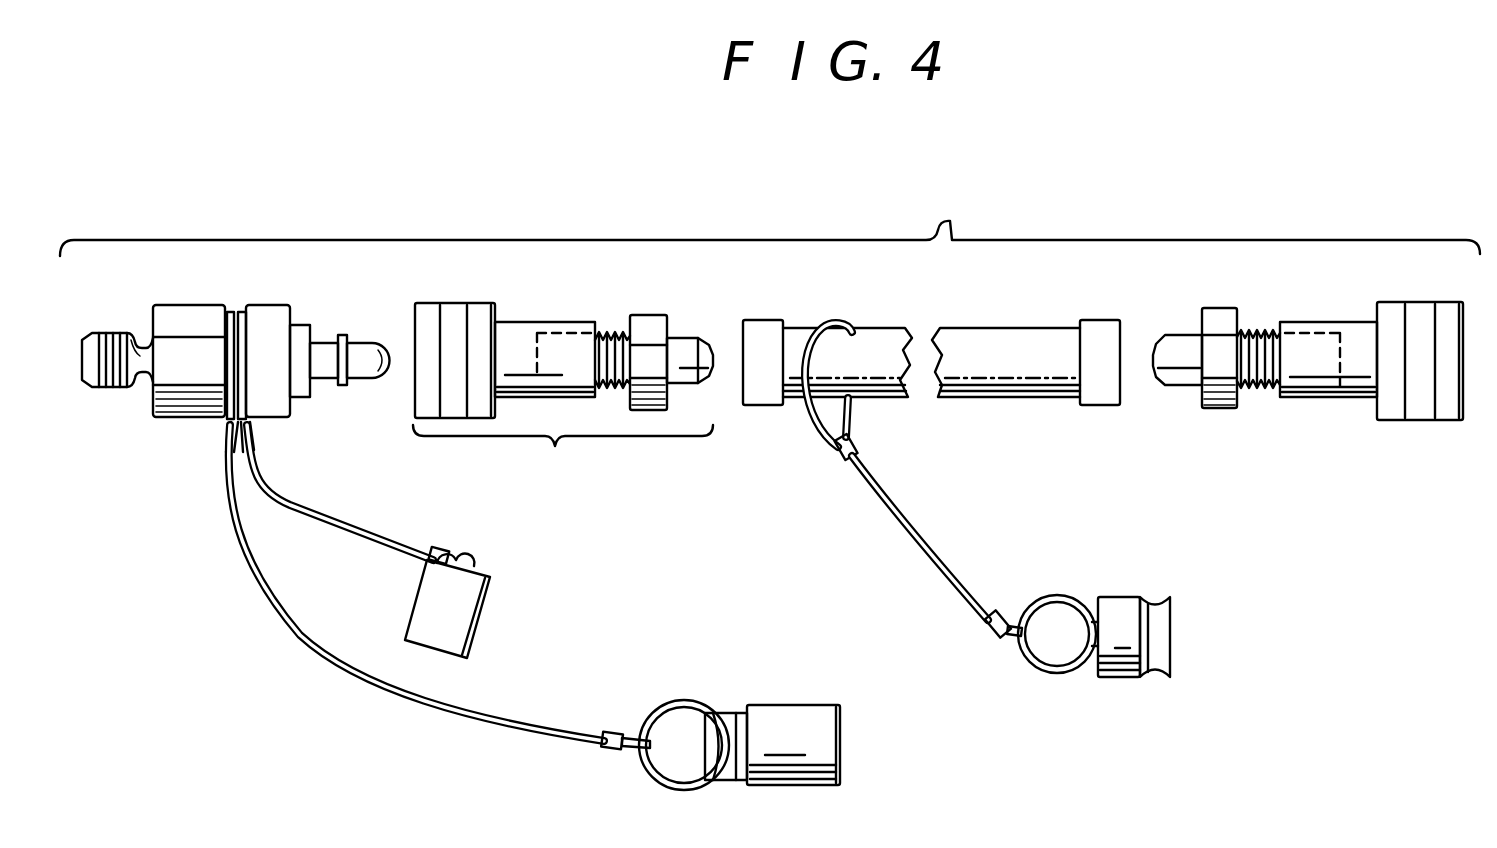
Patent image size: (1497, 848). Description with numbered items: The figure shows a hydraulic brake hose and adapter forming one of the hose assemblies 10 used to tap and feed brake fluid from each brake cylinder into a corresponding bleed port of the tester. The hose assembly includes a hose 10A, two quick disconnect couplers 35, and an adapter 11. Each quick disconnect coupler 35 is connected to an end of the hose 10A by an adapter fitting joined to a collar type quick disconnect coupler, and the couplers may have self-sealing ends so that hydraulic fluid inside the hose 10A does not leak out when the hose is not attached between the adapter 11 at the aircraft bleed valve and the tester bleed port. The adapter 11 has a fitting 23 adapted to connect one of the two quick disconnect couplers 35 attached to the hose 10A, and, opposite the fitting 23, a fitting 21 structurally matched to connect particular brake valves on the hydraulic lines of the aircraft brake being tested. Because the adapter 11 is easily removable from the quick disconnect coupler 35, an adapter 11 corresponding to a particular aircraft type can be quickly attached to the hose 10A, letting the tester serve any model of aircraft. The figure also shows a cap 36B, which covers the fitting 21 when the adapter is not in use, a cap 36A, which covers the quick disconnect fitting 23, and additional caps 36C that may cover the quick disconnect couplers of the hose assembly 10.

The hose assembly 10 is at (770, 219).
The hose 10A is at (962, 328).
The adapter 11 is at (236, 304).
The fitting 21 is at (102, 333).
The fitting 23 is at (362, 341).
The quick disconnect coupler 35 is at (563, 402).
The cap 36A is at (792, 786).
The cap 36B is at (490, 577).
The cap 36C is at (880, 512).